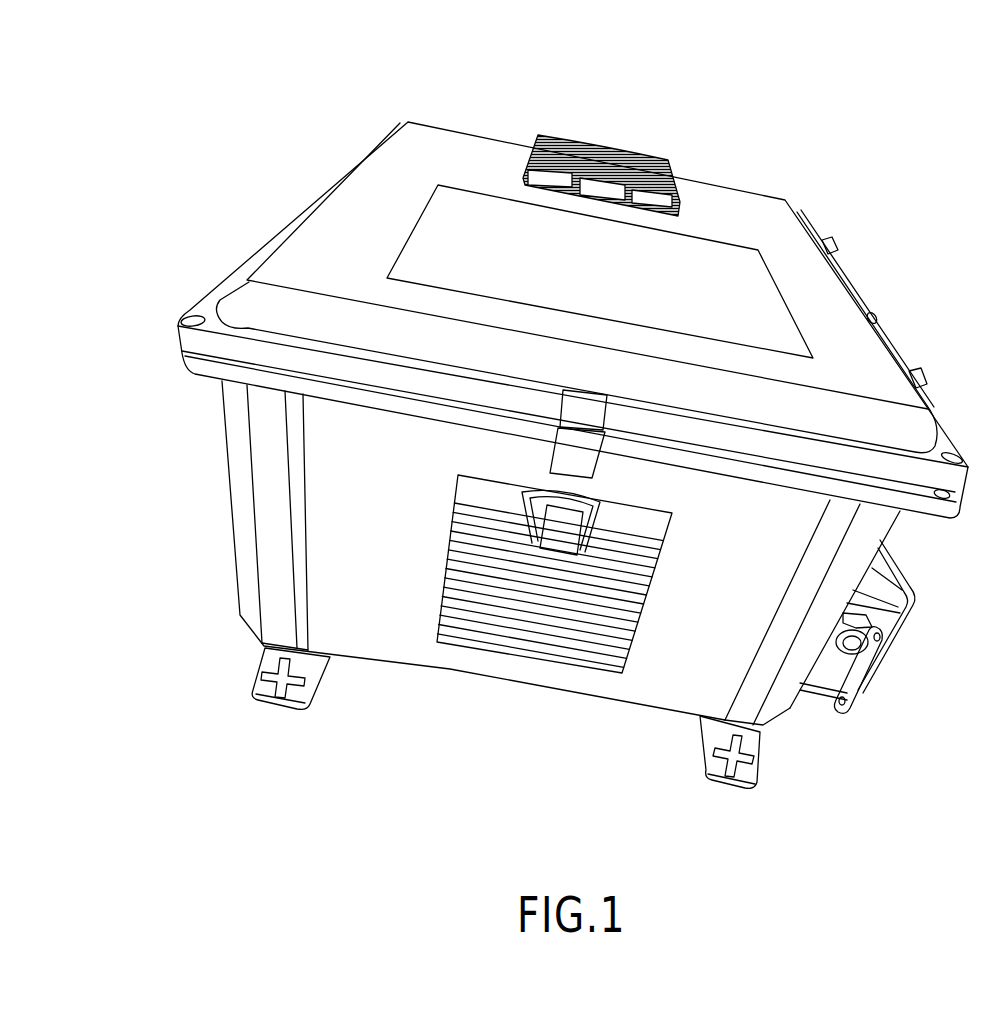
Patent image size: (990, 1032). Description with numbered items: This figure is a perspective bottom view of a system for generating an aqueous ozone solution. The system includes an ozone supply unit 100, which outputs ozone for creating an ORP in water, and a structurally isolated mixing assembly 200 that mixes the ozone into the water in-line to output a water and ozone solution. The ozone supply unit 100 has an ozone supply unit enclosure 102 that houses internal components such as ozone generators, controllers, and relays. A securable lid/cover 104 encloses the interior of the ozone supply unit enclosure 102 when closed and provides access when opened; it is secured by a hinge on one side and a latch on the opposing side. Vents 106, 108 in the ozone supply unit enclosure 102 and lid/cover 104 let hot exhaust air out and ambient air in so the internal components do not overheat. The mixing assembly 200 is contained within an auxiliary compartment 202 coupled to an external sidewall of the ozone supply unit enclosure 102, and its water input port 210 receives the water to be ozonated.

The ozone supply unit 100 is at (298, 50).
The ozone supply unit enclosure 102 is at (240, 506).
The securable lid/cover 104 is at (777, 203).
The vent 106 is at (530, 670).
The vent 108 is at (612, 140).
The mixing assembly 200 is at (906, 651).
The auxiliary compartment 202 is at (906, 572).
The water input port 210 is at (855, 643).